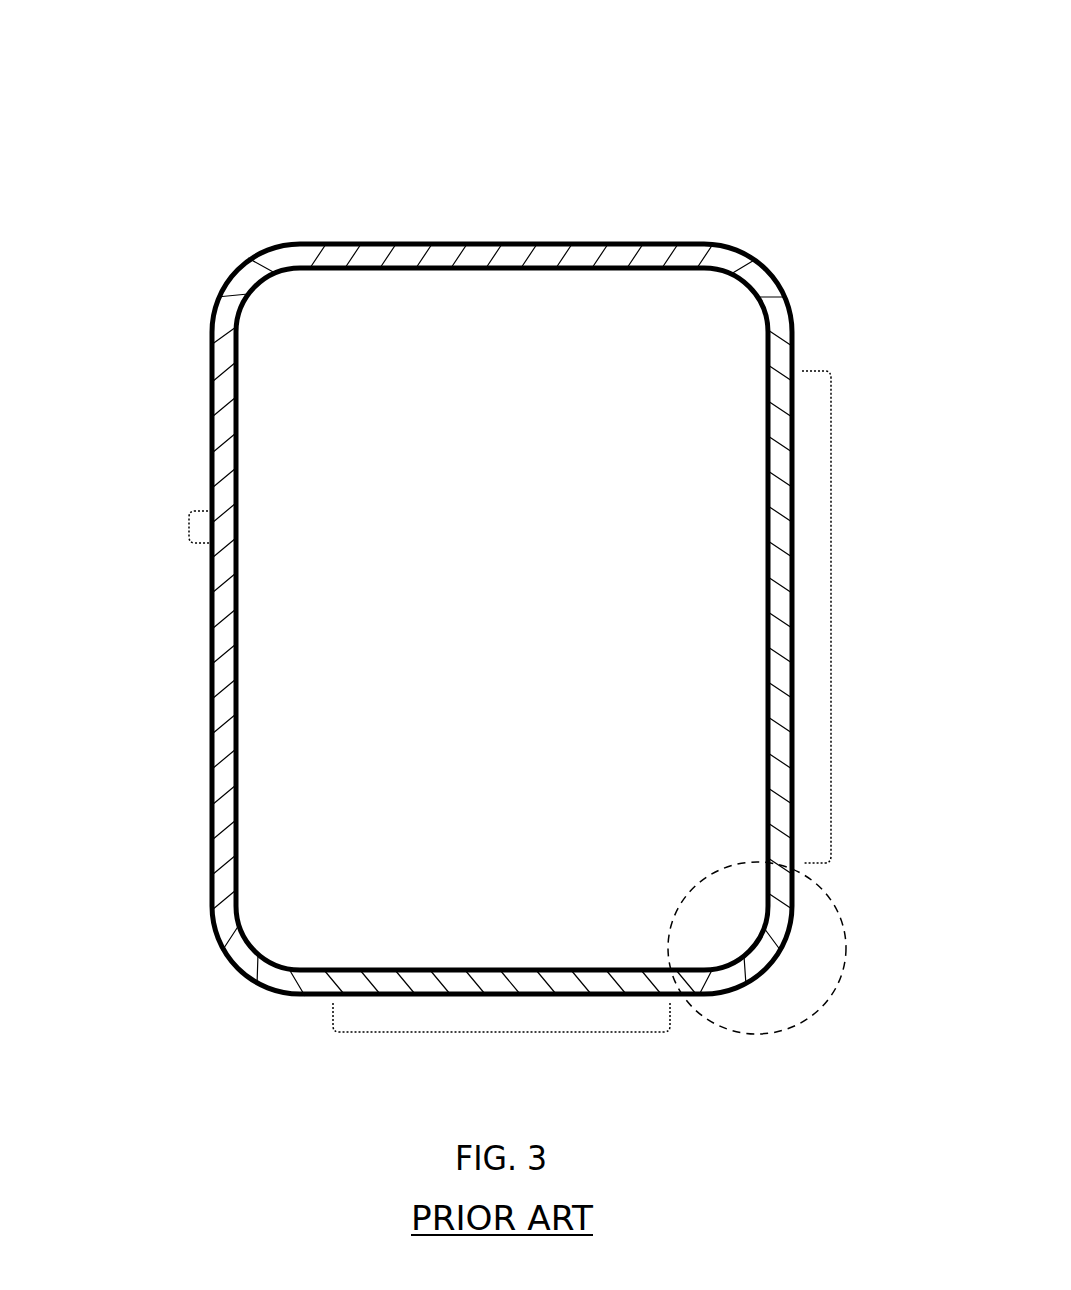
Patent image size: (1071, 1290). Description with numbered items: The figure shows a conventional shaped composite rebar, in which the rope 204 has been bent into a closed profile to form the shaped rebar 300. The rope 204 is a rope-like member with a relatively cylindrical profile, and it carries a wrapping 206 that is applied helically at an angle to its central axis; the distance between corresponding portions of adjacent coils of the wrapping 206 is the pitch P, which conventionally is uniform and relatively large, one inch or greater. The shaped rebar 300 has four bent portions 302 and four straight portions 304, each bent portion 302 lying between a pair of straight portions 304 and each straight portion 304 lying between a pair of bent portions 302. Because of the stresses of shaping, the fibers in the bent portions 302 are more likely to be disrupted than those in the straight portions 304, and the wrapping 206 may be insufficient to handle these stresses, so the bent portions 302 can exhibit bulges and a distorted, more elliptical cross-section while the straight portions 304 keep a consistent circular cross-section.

The shaped rebar 300 is at (97, 130).
The rope 204 is at (780, 297).
The wrapping 206 is at (223, 427).
The bent portion 302 is at (812, 1010).
The straight portion 304 is at (831, 618).
The pitch P is at (189, 527).